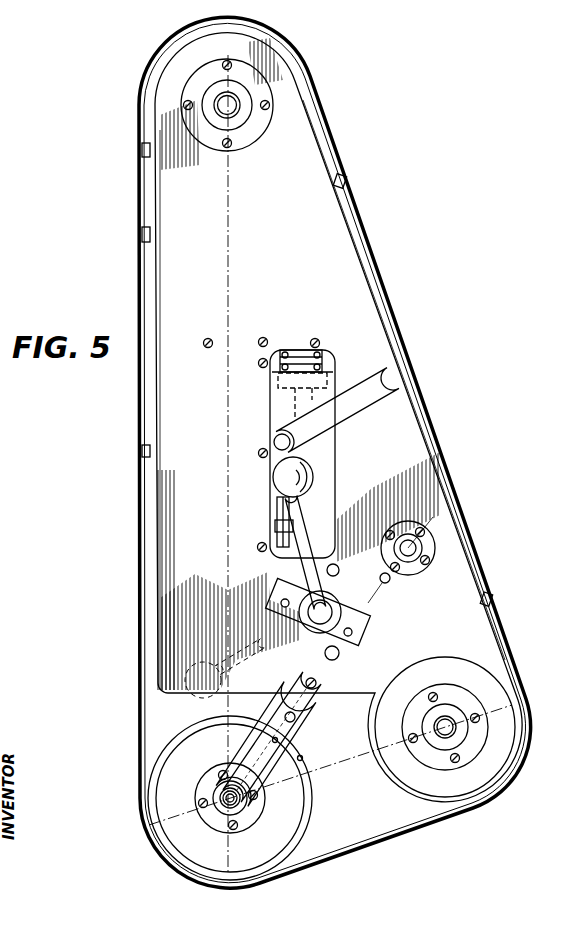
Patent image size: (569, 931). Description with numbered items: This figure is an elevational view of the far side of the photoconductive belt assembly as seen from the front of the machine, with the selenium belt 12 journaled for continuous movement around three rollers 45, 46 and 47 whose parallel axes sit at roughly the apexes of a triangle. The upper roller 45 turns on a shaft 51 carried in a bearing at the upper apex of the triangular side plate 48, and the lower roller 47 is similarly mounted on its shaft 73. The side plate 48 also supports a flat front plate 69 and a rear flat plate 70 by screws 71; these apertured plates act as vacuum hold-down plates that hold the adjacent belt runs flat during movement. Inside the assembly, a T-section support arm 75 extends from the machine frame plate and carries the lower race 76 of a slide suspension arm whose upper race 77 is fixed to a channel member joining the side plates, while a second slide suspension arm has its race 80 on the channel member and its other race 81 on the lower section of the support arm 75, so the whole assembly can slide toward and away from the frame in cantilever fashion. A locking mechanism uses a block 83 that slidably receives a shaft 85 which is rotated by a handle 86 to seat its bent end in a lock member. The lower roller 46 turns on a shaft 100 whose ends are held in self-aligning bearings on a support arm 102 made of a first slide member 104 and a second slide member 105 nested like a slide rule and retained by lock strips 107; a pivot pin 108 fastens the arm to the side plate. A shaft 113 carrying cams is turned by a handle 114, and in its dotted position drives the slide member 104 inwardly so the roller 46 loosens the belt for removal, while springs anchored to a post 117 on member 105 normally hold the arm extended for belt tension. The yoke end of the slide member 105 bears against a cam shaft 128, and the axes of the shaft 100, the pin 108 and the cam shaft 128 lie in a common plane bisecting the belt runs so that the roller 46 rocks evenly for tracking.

The selenium belt 12 is at (326, 116).
The upper roller 45 is at (300, 70).
The lower roller 46 is at (155, 848).
The lower roller 47 is at (485, 798).
The side plate 48 is at (162, 588).
The shaft 51 is at (235, 112).
The front plate 69 is at (143, 275).
The rear flat plate 70 is at (365, 245).
The screws 71 is at (143, 451).
The shaft 73 is at (435, 724).
The support arm 75 is at (272, 400).
The lower race 76 is at (275, 372).
The upper race 77 is at (300, 350).
The race 80 is at (272, 528).
The race 81 is at (276, 511).
The block 83 is at (275, 464).
The shaft 85 is at (274, 444).
The handle 86 is at (365, 402).
The shaft 100 is at (215, 795).
The support arm 102 is at (306, 720).
The first slide member 104 is at (240, 800).
The second slide member 105 is at (300, 742).
The lock strips 107 is at (240, 748).
The pivot pin 108 is at (338, 658).
The shaft 113 is at (326, 602).
The handle 114 is at (314, 480).
The post 117 is at (298, 686).
The cam shaft 128 is at (414, 558).